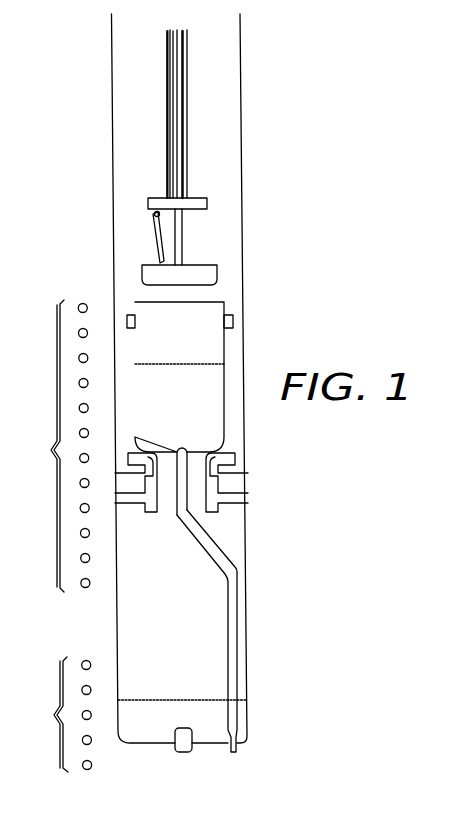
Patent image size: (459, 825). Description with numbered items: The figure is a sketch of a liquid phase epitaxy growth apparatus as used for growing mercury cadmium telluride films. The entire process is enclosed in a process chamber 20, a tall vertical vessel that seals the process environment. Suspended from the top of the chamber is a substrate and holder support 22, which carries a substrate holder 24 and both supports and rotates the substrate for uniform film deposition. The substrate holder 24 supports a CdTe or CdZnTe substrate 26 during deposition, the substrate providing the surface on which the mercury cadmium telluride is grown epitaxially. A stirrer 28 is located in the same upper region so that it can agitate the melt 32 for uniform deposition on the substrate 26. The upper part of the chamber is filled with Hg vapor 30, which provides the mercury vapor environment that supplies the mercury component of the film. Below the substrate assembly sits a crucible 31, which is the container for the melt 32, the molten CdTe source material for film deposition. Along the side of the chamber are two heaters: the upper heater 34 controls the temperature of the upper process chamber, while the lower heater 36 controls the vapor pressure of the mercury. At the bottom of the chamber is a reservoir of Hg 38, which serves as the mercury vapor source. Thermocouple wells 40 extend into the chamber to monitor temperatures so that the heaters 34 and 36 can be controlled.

The process chamber 20 is at (112, 35).
The substrate and holder support 22 is at (167, 108).
The substrate holder 24 is at (153, 212).
The CdTe or CdZnTe substrate 26 is at (150, 232).
The stirrer 28 is at (142, 275).
The Hg vapor 30 is at (223, 248).
The crucible 31 is at (224, 345).
The melt 32 is at (193, 410).
The heater 34 is at (56, 446).
The heater 36 is at (59, 714).
The Hg 38 is at (163, 732).
The thermocouple wells 40 is at (183, 752).